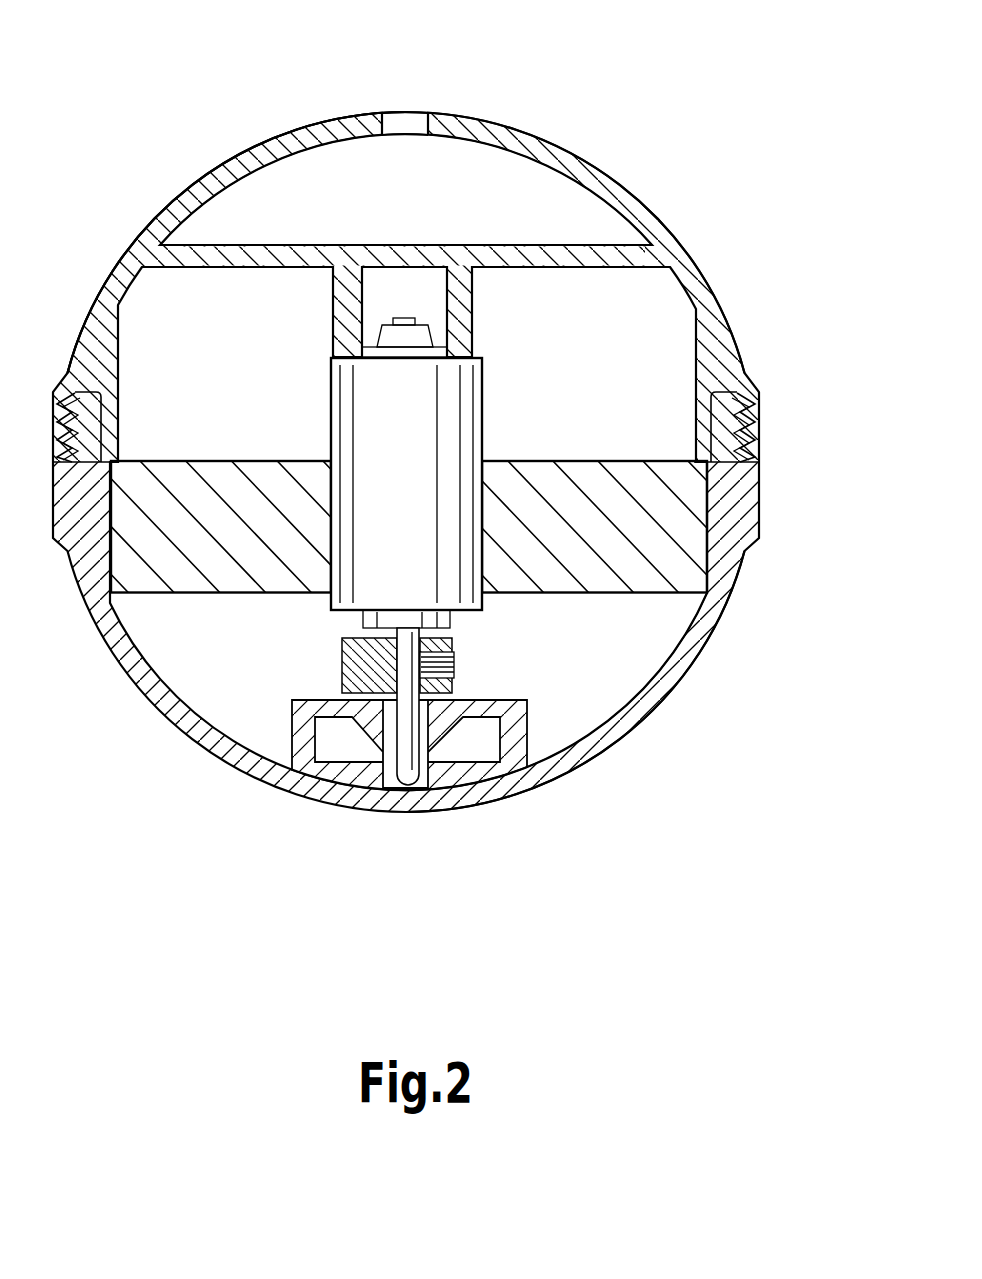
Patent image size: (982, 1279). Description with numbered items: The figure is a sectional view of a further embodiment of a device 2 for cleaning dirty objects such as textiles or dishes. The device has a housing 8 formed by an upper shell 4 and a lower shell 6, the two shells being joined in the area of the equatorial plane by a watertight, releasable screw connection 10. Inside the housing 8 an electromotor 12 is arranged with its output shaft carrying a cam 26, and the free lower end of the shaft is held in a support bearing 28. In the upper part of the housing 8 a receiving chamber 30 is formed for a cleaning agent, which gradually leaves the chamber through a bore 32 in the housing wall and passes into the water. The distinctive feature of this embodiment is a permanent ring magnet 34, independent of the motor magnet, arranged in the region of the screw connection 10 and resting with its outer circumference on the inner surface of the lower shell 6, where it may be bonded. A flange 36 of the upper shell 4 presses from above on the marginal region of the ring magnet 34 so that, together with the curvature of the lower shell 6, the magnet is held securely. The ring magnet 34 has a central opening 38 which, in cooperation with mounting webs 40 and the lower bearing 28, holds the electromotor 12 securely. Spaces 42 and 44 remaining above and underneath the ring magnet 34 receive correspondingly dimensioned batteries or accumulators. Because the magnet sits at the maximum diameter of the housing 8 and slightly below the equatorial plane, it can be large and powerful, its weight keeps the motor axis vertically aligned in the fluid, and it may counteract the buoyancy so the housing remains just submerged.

The device 2 is at (712, 200).
The upper shell 4 is at (590, 160).
The lower shell 6 is at (657, 687).
The housing 8 is at (140, 198).
The screw connection 10 is at (757, 425).
The electromotor 12 is at (422, 521).
The cam 26 is at (363, 677).
The support bearing 28 is at (433, 748).
The receiving chamber 30 is at (422, 207).
The bore 32 is at (412, 115).
The ring magnet 34 is at (160, 583).
The flange 36 is at (118, 422).
The central opening 38 is at (487, 476).
The mounting webs 40 is at (470, 320).
The space 42 is at (668, 348).
The space 44 is at (640, 630).